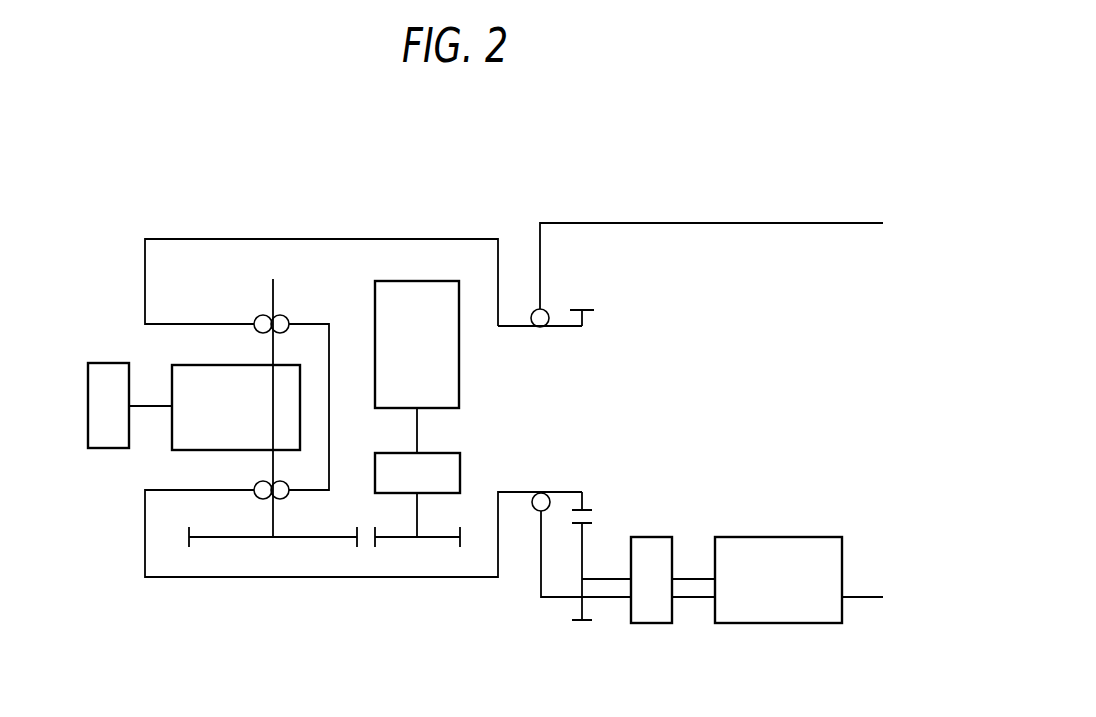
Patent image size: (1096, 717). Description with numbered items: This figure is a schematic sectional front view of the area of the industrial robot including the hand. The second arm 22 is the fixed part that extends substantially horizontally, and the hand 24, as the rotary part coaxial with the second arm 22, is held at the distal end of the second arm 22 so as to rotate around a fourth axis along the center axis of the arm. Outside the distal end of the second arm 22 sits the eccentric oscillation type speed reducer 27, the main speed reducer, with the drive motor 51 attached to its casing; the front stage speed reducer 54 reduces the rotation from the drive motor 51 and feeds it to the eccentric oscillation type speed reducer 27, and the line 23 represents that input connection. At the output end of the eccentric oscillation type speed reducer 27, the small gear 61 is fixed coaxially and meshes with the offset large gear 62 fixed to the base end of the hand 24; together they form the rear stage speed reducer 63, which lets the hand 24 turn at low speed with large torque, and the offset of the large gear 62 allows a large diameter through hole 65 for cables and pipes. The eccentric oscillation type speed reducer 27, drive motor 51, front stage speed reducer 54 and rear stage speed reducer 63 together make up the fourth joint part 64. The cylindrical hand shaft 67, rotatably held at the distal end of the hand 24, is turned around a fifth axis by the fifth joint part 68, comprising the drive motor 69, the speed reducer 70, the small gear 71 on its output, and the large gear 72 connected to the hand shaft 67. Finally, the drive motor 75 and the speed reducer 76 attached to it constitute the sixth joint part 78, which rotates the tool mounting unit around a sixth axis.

The second arm 22 is at (718, 223).
The gear 23 is at (548, 312).
The hand 24 is at (318, 238).
The eccentric oscillation type speed reducer 27 is at (680, 546).
The front stage speed reducer 54 is at (652, 533).
The drive motor 51 is at (775, 535).
The small gear 61 is at (598, 482).
The large gear 62 is at (593, 310).
The rear stage speed reducer 63 is at (589, 515).
The fourth joint part 64 is at (652, 632).
The through hole 65 is at (570, 328).
The hand shaft 67 is at (273, 515).
The fifth joint part 68 is at (429, 451).
The drive motor 69 is at (375, 297).
The speed reducer 70 is at (460, 468).
The small gear 71 is at (435, 537).
The large gear 72 is at (317, 537).
The drive motor 75 is at (172, 372).
The speed reducer 76 is at (88, 410).
The sixth joint part 78 is at (185, 453).